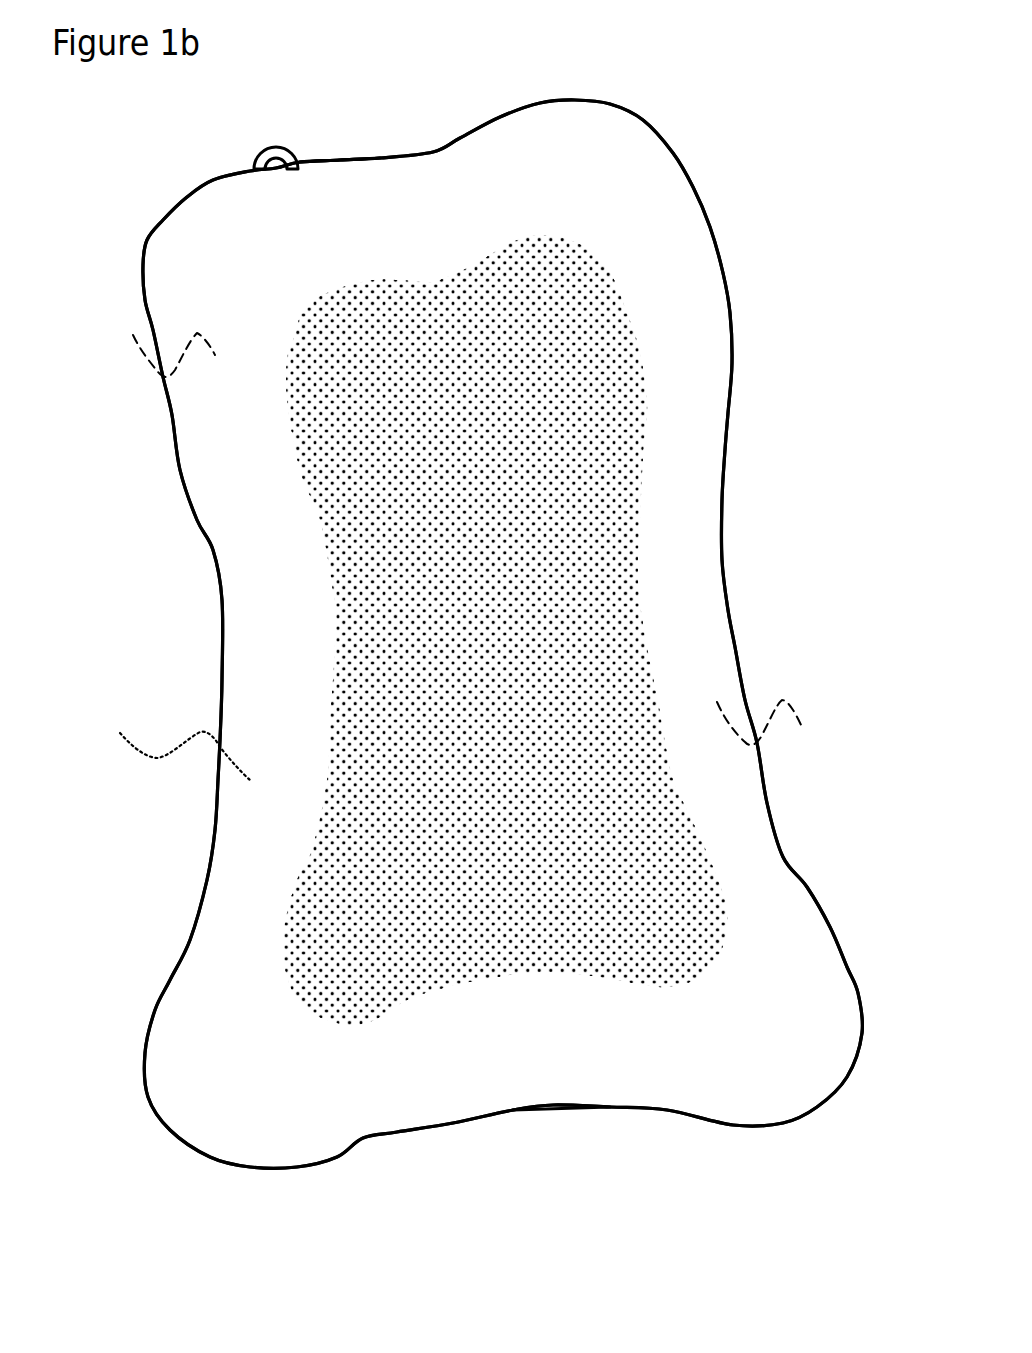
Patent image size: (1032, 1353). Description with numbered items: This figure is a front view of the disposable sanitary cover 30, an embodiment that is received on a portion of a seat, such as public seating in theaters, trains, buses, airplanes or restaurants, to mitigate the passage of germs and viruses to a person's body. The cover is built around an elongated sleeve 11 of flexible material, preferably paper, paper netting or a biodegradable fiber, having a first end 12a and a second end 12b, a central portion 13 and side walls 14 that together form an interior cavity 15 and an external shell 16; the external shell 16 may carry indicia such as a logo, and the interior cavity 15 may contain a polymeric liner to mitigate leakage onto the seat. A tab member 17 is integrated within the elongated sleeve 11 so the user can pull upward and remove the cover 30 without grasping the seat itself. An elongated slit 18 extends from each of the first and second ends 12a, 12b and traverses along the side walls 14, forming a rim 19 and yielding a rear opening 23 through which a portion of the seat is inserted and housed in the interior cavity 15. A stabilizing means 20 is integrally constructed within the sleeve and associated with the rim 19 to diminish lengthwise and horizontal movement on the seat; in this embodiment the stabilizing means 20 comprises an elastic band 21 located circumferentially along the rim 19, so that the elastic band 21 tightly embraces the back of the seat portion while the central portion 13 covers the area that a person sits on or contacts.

The disposable sanitary cover 30 is at (193, 177).
The elongated sleeve 11 is at (712, 230).
The first end 12a is at (383, 173).
The second end 12b is at (560, 1107).
The tab member 17 is at (274, 147).
The side walls 14 is at (459, 532).
The interior cavity 15 is at (162, 744).
The external shell 16 is at (213, 917).
The elongated slit 18 is at (307, 487).
The rim 19 is at (277, 368).
The stabilizing means 20 is at (650, 380).
The elastic band 21 is at (650, 440).
The rear opening 23 is at (587, 528).
The central portion 13 is at (683, 637).